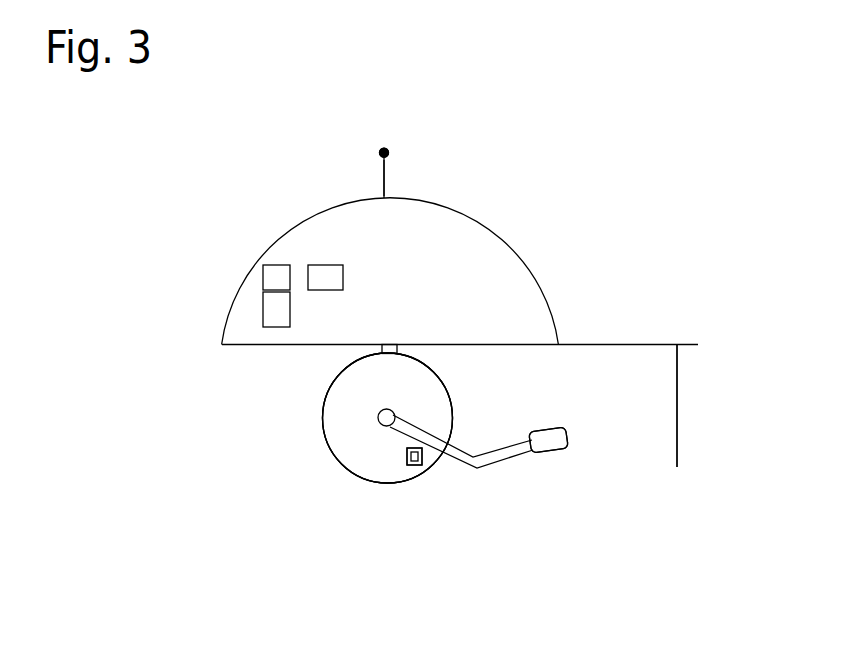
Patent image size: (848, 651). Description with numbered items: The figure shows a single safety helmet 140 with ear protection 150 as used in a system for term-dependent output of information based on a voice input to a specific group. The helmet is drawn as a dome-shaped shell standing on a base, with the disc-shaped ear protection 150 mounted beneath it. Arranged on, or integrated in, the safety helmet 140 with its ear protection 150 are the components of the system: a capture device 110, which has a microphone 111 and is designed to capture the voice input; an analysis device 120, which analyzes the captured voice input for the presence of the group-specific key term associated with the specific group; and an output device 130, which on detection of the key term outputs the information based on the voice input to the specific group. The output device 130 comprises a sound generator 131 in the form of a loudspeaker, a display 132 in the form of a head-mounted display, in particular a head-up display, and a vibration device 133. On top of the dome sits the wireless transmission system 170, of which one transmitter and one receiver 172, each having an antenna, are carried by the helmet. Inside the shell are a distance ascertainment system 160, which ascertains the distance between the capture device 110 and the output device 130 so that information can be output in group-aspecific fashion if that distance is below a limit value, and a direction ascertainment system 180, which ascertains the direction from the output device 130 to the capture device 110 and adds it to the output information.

The capture device 110 is at (563, 448).
The microphone 111 is at (549, 440).
The analysis device 120 is at (270, 313).
The output device 130 is at (500, 414).
The sound generator 131 is at (363, 480).
The display 132 is at (677, 437).
The vibration device 133 is at (417, 466).
The safety helmet 140 is at (530, 273).
The ear protection 150 is at (327, 445).
The distance ascertainment system 160 is at (277, 273).
The wireless transmission system 170 is at (384, 172).
The receiver 172 is at (384, 152).
The direction ascertainment system 180 is at (330, 273).